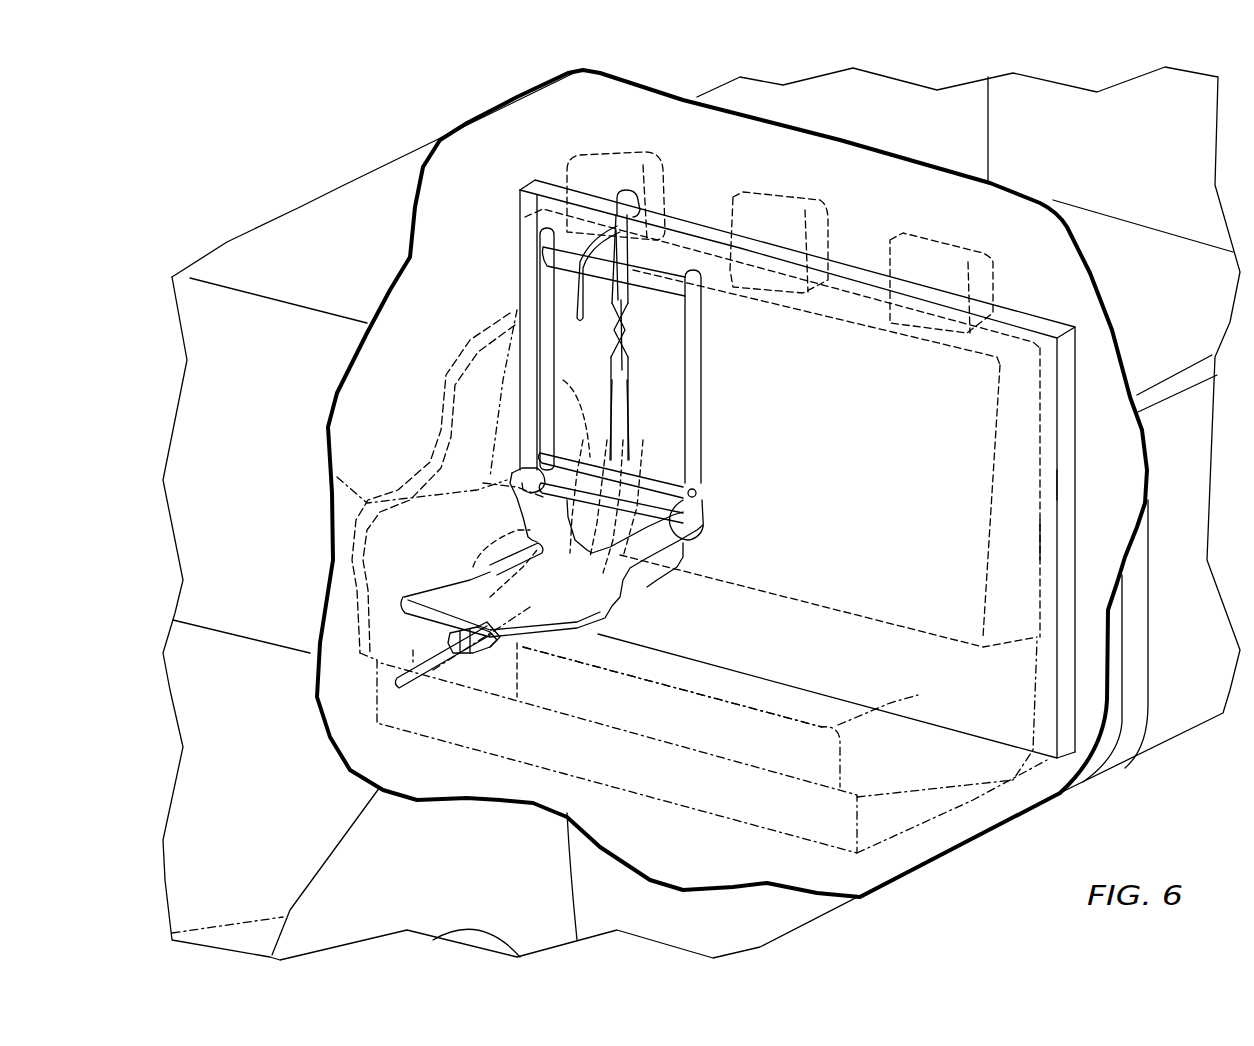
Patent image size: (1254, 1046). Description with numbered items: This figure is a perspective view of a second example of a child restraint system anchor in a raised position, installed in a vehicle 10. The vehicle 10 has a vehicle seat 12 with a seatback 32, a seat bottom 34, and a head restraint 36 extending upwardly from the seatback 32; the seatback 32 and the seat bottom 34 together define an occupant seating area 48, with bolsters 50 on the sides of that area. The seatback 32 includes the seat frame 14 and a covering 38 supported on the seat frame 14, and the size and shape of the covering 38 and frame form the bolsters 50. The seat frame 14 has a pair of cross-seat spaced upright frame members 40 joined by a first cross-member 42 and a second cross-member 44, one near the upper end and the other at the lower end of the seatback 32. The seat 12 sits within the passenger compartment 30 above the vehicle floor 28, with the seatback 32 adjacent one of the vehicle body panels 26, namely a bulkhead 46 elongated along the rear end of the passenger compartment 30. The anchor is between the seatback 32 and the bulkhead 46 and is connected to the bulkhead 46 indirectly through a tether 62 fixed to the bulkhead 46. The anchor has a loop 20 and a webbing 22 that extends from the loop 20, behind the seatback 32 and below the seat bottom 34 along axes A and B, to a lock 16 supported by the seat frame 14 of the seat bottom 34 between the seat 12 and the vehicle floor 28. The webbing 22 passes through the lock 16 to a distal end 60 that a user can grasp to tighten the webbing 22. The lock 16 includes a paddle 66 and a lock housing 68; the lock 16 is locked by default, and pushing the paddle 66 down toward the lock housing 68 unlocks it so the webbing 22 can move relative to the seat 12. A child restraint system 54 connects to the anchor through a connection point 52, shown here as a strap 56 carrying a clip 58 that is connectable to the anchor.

The vehicle 10 is at (302, 122).
The vehicle seat 12 is at (1013, 297).
The seat frame 14 is at (594, 459).
The lock 16 is at (477, 665).
The loop 20 is at (633, 323).
The webbing 22 is at (613, 387).
The vehicle body panels 26 is at (1063, 313).
The vehicle floor 28 is at (803, 880).
The passenger compartment 30 is at (997, 213).
The seatback 32 is at (1040, 530).
The seat bottom 34 is at (843, 730).
The head restraint 36 is at (647, 160).
The covering 38 is at (1040, 488).
The upright frame members 40 is at (547, 303).
The first cross-member 42 is at (663, 293).
The second cross-member 44 is at (680, 480).
The bulkhead 46 is at (1070, 365).
The occupant seating area 48 is at (400, 380).
The bolsters 50 is at (520, 300).
The connection point 52 is at (590, 220).
The child restraint system 54 is at (363, 500).
The strap 56 is at (591, 225).
The clip 58 is at (633, 293).
The distal end 60 is at (397, 682).
The tether 62 is at (627, 190).
The paddle 66 is at (447, 633).
The lock housing 68 is at (483, 643).